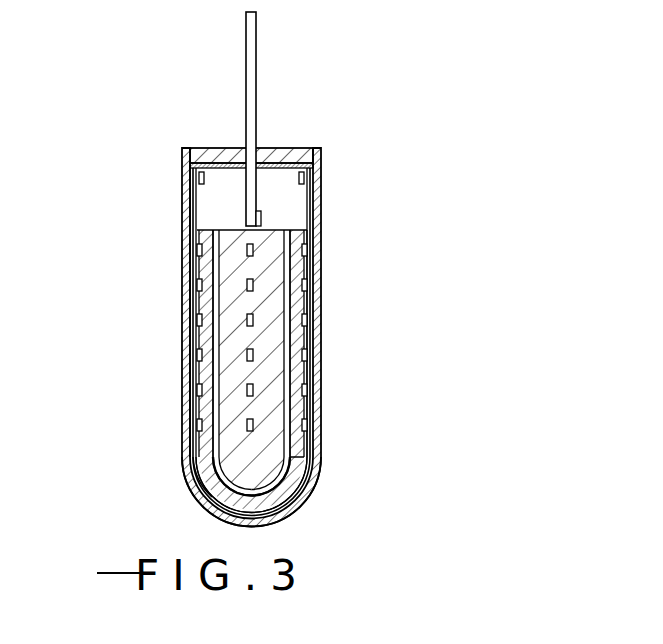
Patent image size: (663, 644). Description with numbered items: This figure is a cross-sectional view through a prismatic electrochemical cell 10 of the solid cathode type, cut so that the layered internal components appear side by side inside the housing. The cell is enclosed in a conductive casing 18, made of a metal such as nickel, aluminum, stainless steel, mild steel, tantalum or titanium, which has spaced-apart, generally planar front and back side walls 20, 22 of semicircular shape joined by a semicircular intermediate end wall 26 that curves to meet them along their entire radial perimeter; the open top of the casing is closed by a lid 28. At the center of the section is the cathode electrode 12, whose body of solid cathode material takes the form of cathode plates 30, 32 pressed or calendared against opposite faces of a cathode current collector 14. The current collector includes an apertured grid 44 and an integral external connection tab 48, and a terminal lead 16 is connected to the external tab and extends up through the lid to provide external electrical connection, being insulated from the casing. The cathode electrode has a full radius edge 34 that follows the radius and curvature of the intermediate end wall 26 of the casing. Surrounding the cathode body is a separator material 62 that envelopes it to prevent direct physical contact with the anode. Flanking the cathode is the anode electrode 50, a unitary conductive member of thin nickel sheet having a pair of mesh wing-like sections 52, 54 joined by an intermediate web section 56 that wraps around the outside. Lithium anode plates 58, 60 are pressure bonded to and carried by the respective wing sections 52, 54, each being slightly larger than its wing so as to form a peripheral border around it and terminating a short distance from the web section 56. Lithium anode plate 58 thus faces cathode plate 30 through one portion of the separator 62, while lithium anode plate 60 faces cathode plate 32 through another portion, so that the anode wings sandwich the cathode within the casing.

The prismatic electrochemical cell 10 is at (440, 152).
The cathode electrode 12 is at (208, 468).
The cathode current collector 14 is at (268, 420).
The terminal lead 16 is at (258, 45).
The conductive casing 18 is at (326, 169).
The front side wall 20 is at (185, 254).
The back side wall 22 is at (307, 230).
The intermediate end wall 26 is at (292, 518).
The lid 28 is at (288, 148).
The cathode plate 30 is at (232, 300).
The cathode plate 32 is at (272, 345).
The full radius edge 34 is at (296, 502).
The apertured grid 44 is at (253, 288).
The external connection tab 48 is at (261, 218).
The anode electrode 50 is at (330, 356).
The wing-like section 52 is at (196, 357).
The wing-like section 54 is at (307, 322).
The intermediate web section 56 is at (220, 158).
The lithium anode plate 58 is at (205, 400).
The lithium anode plate 60 is at (305, 375).
The separator material 62 is at (300, 481).